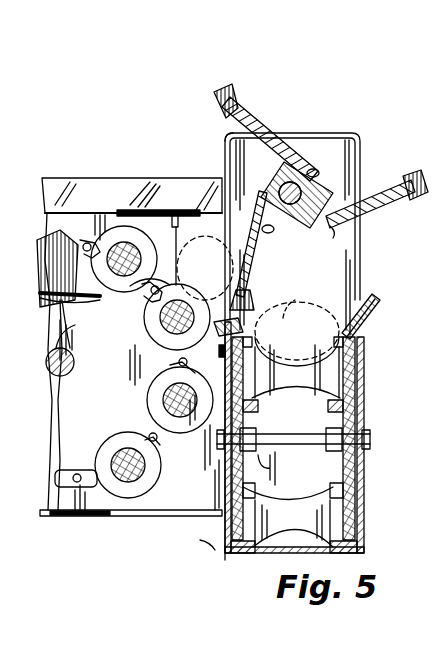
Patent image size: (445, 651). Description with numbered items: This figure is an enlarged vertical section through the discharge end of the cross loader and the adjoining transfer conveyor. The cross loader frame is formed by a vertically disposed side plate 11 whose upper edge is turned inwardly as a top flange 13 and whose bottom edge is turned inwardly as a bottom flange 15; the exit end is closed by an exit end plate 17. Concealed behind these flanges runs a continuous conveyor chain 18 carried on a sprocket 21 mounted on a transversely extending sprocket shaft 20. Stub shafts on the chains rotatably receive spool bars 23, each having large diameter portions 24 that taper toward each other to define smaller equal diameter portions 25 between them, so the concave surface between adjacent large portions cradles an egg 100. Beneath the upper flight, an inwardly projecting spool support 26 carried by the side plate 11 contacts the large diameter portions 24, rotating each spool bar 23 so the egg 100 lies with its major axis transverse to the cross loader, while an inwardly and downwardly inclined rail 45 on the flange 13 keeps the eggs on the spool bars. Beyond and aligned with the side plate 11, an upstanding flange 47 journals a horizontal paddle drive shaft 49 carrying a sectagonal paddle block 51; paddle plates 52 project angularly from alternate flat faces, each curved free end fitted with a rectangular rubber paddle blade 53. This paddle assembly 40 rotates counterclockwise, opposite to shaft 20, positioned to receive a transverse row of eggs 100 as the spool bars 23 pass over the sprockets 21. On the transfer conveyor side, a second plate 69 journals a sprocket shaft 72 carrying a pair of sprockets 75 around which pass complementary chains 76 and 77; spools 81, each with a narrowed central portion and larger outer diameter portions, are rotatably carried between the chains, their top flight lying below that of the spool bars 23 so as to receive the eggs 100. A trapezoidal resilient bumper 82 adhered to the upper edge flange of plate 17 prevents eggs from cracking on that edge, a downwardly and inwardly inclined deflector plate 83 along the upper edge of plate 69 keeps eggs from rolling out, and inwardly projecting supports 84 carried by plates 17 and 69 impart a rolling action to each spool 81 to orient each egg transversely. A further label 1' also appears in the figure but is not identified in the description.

The frame 1' is at (212, 151).
The side plate 11 is at (196, 494).
The top flange 13 is at (208, 212).
The bottom flange 15 is at (192, 516).
The exit end plate 17 is at (225, 538).
The conveyor chain 18 is at (76, 470).
The sprocket shaft 20 is at (100, 345).
The sprocket 21 is at (114, 389).
The spool bar 23 is at (148, 318).
The large diameter portion 24 is at (128, 228).
The equal diameter portion 25 is at (165, 290).
The spool support 26 is at (100, 302).
The paddle assembly 40 is at (340, 226).
The rail 45 is at (112, 202).
The upstanding flange 47 is at (338, 152).
The paddle drive shaft 49 is at (284, 170).
The paddle block 51 is at (318, 176).
The paddle plate 52 is at (312, 168).
The paddle blade 53 is at (282, 104).
The second plate 69 is at (364, 468).
The sprocket shaft 72 is at (318, 446).
The sprocket 75 is at (340, 460).
The chain 76 is at (225, 356).
The chain 77 is at (356, 360).
The spool 81 is at (270, 528).
The bumper 82 is at (226, 322).
The deflector plate 83 is at (374, 292).
The support 84 is at (330, 398).
The egg 100 is at (325, 300).